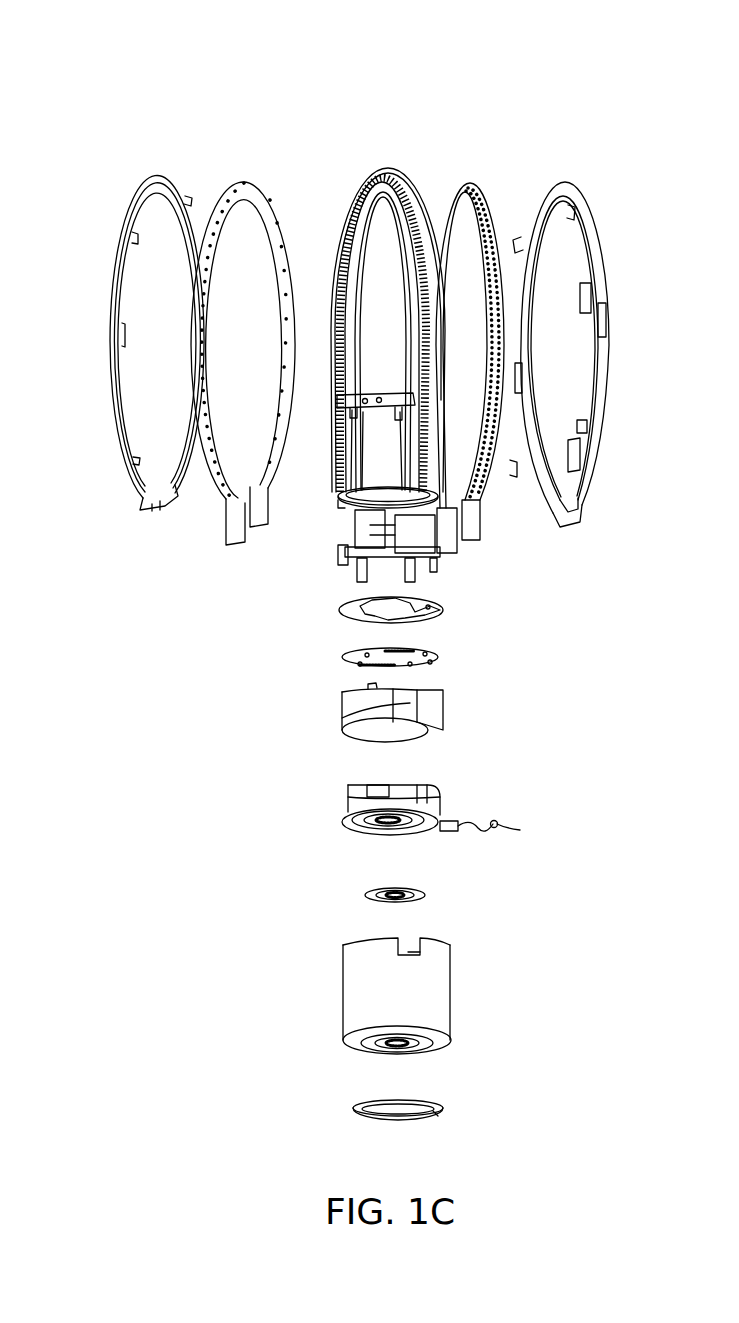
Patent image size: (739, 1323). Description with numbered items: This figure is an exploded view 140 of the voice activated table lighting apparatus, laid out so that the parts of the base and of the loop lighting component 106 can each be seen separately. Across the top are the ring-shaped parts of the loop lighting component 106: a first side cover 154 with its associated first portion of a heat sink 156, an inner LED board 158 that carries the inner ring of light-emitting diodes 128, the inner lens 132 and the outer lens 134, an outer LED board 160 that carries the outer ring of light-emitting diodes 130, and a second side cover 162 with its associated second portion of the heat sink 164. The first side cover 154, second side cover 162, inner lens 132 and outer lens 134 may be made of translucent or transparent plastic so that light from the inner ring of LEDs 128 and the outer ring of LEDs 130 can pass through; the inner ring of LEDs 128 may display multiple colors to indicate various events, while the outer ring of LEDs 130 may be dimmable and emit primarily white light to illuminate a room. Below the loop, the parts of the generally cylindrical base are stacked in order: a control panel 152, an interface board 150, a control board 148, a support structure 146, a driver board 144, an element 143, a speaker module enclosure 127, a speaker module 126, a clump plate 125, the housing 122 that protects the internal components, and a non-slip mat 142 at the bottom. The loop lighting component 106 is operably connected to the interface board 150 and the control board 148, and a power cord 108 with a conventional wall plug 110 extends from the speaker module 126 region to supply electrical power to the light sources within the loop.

The loop lighting component 106 is at (112, 181).
The power cord 108 is at (471, 832).
The wall plug 110 is at (520, 830).
The housing 122 is at (343, 978).
The clump plate 125 is at (365, 893).
The speaker module 126 is at (348, 803).
The speaker module enclosure 127 is at (343, 706).
The inner ring of light-emitting diodes (LEDs) 128 is at (222, 240).
The outer ring of light-emitting diodes (LEDs) 130 is at (470, 183).
The inner lens 132 is at (358, 222).
The outer lens 134 is at (394, 168).
The exploded view 140 is at (590, 68).
The non-slip mat 142 is at (360, 1109).
The circuit board 143 is at (440, 656).
The driver board 144 is at (443, 609).
The support structure 146 is at (445, 560).
The control board 148 is at (343, 504).
The interface board 150 is at (343, 493).
The control panel 152 is at (372, 393).
The first side cover 154 is at (160, 172).
The first portion of a heat sink 156 is at (128, 475).
The inner LED board 158 is at (226, 529).
The outer LED board 160 is at (492, 188).
The second side cover 162 is at (600, 210).
The second portion of the heat sink 164 is at (590, 476).